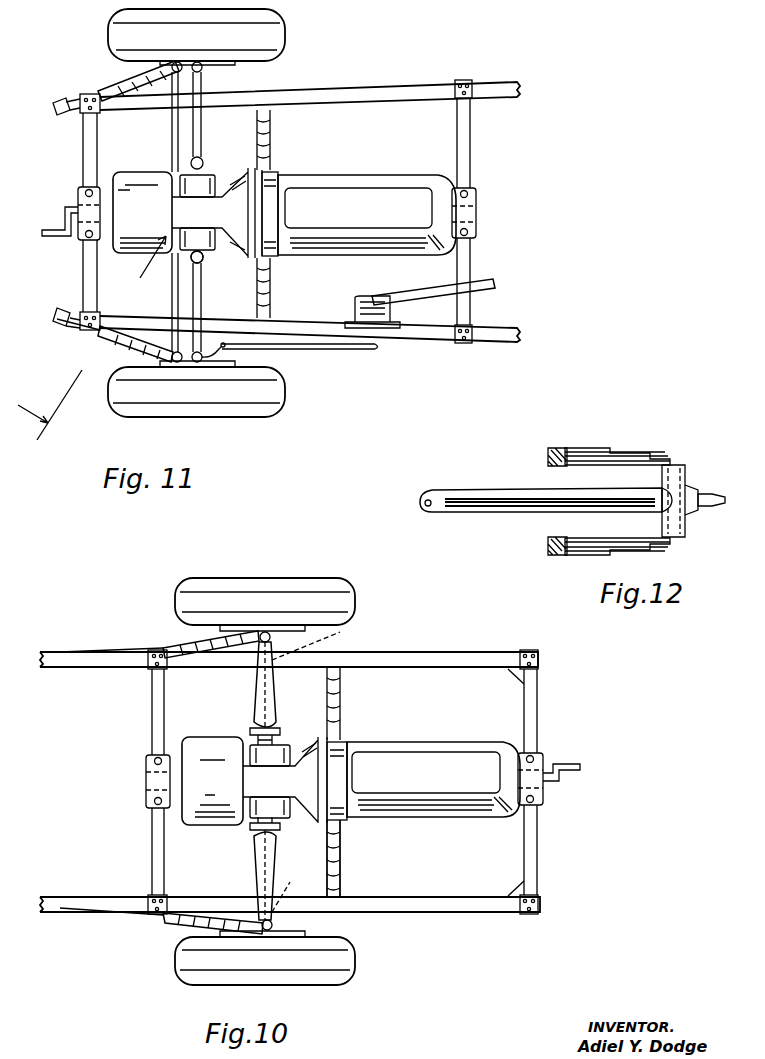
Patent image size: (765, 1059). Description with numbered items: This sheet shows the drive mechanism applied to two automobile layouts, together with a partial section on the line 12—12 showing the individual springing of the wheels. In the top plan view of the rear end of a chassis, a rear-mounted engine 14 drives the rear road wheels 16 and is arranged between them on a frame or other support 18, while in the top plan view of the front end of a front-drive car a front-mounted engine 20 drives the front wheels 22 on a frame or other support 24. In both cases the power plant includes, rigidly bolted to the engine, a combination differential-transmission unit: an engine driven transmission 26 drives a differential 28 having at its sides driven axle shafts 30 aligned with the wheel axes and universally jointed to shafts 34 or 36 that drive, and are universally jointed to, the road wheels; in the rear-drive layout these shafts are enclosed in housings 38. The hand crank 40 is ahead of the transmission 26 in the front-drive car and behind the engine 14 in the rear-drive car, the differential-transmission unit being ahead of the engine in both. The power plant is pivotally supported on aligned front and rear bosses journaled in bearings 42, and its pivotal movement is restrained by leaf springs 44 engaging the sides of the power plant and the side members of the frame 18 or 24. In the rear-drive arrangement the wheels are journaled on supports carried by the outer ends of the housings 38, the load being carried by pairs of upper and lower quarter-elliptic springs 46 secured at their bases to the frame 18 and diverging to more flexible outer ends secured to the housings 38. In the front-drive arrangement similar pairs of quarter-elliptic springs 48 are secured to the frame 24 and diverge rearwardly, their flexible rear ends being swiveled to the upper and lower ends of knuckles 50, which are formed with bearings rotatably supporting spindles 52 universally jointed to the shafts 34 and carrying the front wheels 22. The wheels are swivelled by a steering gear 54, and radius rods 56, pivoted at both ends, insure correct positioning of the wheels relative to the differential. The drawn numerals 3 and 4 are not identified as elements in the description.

In FIG. 11, the bearing 3 is at (204, 258).
In FIG. 10, the spring post 4 is at (340, 870).
In FIG. 11, the section line 12 is at (92, 326).
In FIG. 10, the rear-mounted engine 14 is at (392, 760).
In FIG. 10, the rear road wheels 16 is at (285, 585).
In FIG. 10, the frame 18 is at (493, 877).
In FIG. 11, the front-mounted engine 20 is at (340, 200).
In FIG. 11, the front wheels 22 is at (280, 37).
In FIG. 11, the frame 24 is at (410, 90).
In FIG. 11, the transmission 26 is at (120, 238).
In FIG. 10, the transmission 26 is at (190, 808).
In FIG. 11, the differential 28 is at (205, 205).
In FIG. 10, the differential 28 is at (275, 765).
In FIG. 11, the driven axle shafts 30 is at (203, 158).
In FIG. 10, the driven axle shafts 30 is at (258, 745).
In FIG. 11, the shafts 34 is at (203, 73).
In FIG. 10, the shafts 36 is at (324, 768).
In FIG. 10, the housings 38 is at (256, 676).
In FIG. 11, the hand crank 40 is at (65, 212).
In FIG. 10, the hand crank 40 is at (565, 768).
In FIG. 11, the bearings 42 is at (76, 200).
In FIG. 10, the bearings 42 is at (146, 793).
In FIG. 11, the leaf springs 44 is at (262, 148).
In FIG. 10, the leaf springs 44 is at (340, 700).
In FIG. 10, the quarter-elliptic springs 46 is at (180, 640).
In FIG. 11, the quarter-elliptic springs 48 is at (100, 85).
In FIG. 12, the quarter-elliptic springs 48 is at (590, 448).
In FIG. 12, the knuckles 50 is at (690, 487).
In FIG. 12, the spindles 52 is at (700, 506).
In FIG. 11, the steering gear 54 is at (478, 284).
In FIG. 11, the radius rods 56 is at (170, 140).
In FIG. 12, the radius rods 56 is at (510, 500).